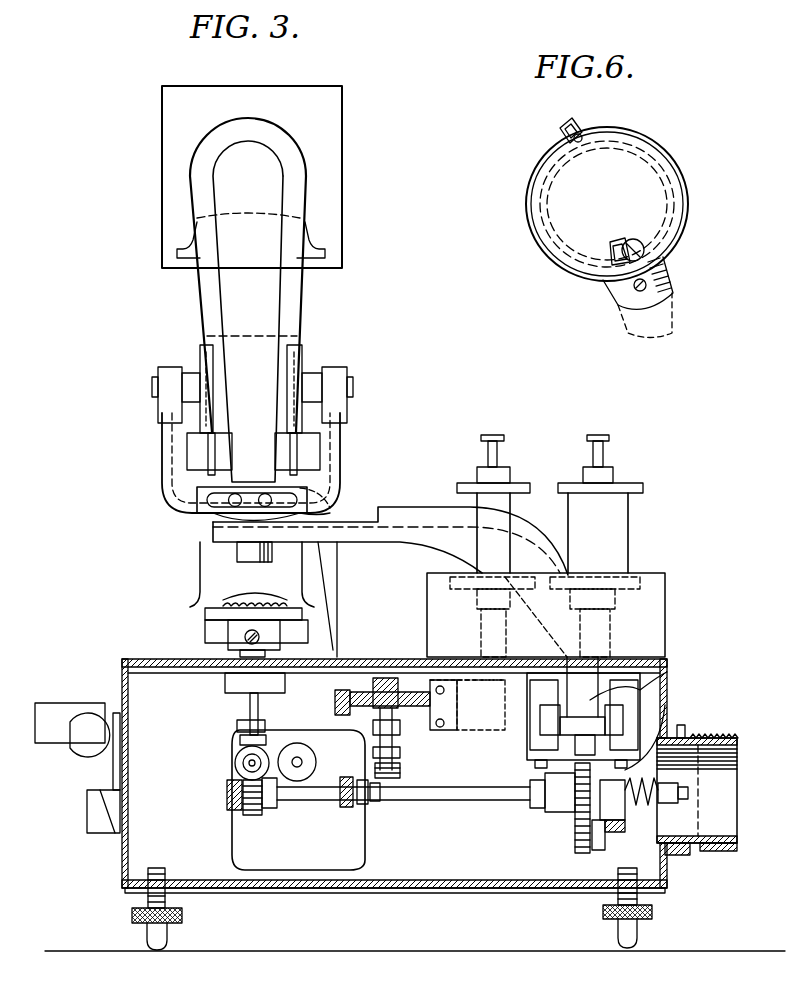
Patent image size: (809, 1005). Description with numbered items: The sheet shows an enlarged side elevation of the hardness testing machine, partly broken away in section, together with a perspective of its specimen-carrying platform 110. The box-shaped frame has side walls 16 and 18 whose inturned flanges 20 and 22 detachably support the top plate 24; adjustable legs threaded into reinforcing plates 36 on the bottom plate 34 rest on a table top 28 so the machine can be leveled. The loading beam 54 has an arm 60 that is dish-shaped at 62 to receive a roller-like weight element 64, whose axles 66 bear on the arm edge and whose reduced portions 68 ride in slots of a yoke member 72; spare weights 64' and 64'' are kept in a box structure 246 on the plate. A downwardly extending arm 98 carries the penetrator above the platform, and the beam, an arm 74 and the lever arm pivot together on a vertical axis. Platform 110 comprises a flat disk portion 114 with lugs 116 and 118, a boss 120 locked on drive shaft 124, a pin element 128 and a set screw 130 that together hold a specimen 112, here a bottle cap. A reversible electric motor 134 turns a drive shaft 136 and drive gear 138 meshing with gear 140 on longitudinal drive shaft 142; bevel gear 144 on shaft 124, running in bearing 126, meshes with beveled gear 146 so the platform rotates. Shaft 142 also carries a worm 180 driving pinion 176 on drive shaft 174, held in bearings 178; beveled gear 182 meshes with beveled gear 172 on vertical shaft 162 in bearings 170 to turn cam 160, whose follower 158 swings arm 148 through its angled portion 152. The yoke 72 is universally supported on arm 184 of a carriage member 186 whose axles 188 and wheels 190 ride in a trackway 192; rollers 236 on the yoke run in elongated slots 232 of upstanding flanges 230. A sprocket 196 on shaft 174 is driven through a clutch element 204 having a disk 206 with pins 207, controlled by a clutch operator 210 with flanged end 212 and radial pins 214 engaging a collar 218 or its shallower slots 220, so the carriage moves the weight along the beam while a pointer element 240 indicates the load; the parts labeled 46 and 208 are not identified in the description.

In FIG. 3, the side wall 16 is at (122, 858).
In FIG. 3, the side wall 18 is at (667, 692).
In FIG. 3, the inturned flange 20 is at (122, 672).
In FIG. 3, the inturned flange 22 is at (667, 662).
In FIG. 3, the top wall or plate 24 is at (133, 659).
In FIG. 3, the table top 28 is at (255, 951).
In FIG. 3, the bottom plate 34 is at (395, 890).
In FIG. 3, the reinforcing plates 36 is at (560, 890).
In FIG. 3, the standard 46 is at (200, 560).
In FIG. 3, the loading beam 54 is at (175, 435).
In FIG. 3, the arm 60 is at (320, 452).
In FIG. 3, the dish-shaped portion 62 is at (300, 440).
In FIG. 3, the weight element 64 is at (306, 260).
In FIG. 3, the spare weight 64' is at (500, 504).
In FIG. 3, the spare weight 64'' is at (606, 504).
In FIG. 3, the axle or hub 66 is at (305, 362).
In FIG. 3, the reduced portion 68 is at (330, 367).
In FIG. 3, the yoke member 72 is at (340, 478).
In FIG. 3, the arm 74 is at (251, 240).
In FIG. 3, the downwardly extending arm 98 is at (312, 238).
In FIG. 3, the platform 110 is at (300, 620).
In FIG. 6, the platform 110 is at (695, 200).
In FIG. 3, the specimen 112 is at (298, 595).
In FIG. 6, the specimen 112 is at (660, 135).
In FIG. 6, the flat disk portion 114 is at (682, 170).
In FIG. 6, the lug 116 is at (612, 242).
In FIG. 6, the lug 118 is at (575, 120).
In FIG. 6, the boss 120 is at (670, 270).
In FIG. 3, the drive shaft 124 is at (250, 706).
In FIG. 6, the drive shaft 124 is at (675, 295).
In FIG. 3, the bearing 126 is at (225, 683).
In FIG. 6, the bearing 126 is at (646, 285).
In FIG. 3, the pin element 128 is at (237, 724).
In FIG. 6, the pin element 128 is at (583, 138).
In FIG. 6, the set screw 130 is at (631, 239).
In FIG. 3, the reversible electric motor 134 is at (232, 844).
In FIG. 3, the drive shaft 136 is at (302, 762).
In FIG. 3, the drive gear 138 is at (310, 748).
In FIG. 3, the gear 140 is at (235, 760).
In FIG. 3, the drive shaft 142 is at (227, 790).
In FIG. 3, the bevel gear 144 is at (240, 740).
In FIG. 3, the beveled gear 146 is at (243, 766).
In FIG. 3, the arm 148 is at (226, 632).
In FIG. 3, the angled portion 152 is at (350, 690).
In FIG. 3, the cam follower 158 is at (440, 680).
In FIG. 3, the cam 160 is at (380, 678).
In FIG. 3, the vertical shaft 162 is at (392, 690).
In FIG. 3, the bearings 170 is at (400, 750).
In FIG. 3, the beveled gear 172 is at (400, 772).
In FIG. 3, the drive shaft 174 is at (445, 800).
In FIG. 3, the pinion 176 is at (250, 815).
In FIG. 3, the bearings 178 is at (530, 810).
In FIG. 3, the worm 180 is at (272, 735).
In FIG. 3, the beveled gear 182 is at (378, 800).
In FIG. 3, the arm 184 is at (414, 507).
In FIG. 3, the carriage member 186 is at (612, 660).
In FIG. 3, the axles 188 is at (644, 683).
In FIG. 3, the wheels 190 is at (667, 706).
In FIG. 3, the trackway 192 is at (550, 745).
In FIG. 3, the sprocket 196 is at (575, 848).
In FIG. 3, the clutch element 204 is at (715, 735).
In FIG. 3, the disk 206 is at (596, 850).
In FIG. 3, the pins 207 is at (625, 810).
In FIG. 3, the spring 208 is at (650, 803).
In FIG. 3, the clutch operator 210 is at (712, 851).
In FIG. 3, the flanged end 212 is at (603, 832).
In FIG. 3, the radially extending pins 214 is at (682, 855).
In FIG. 3, the collar 218 is at (686, 728).
In FIG. 3, the slots 220 is at (698, 788).
In FIG. 3, the upstanding flanges 230 is at (200, 495).
In FIG. 3, the elongated slot 232 is at (330, 494).
In FIG. 3, the rollers 236 is at (330, 512).
In FIG. 3, the pointer element 240 is at (338, 582).
In FIG. 3, the box structure 246 is at (665, 580).